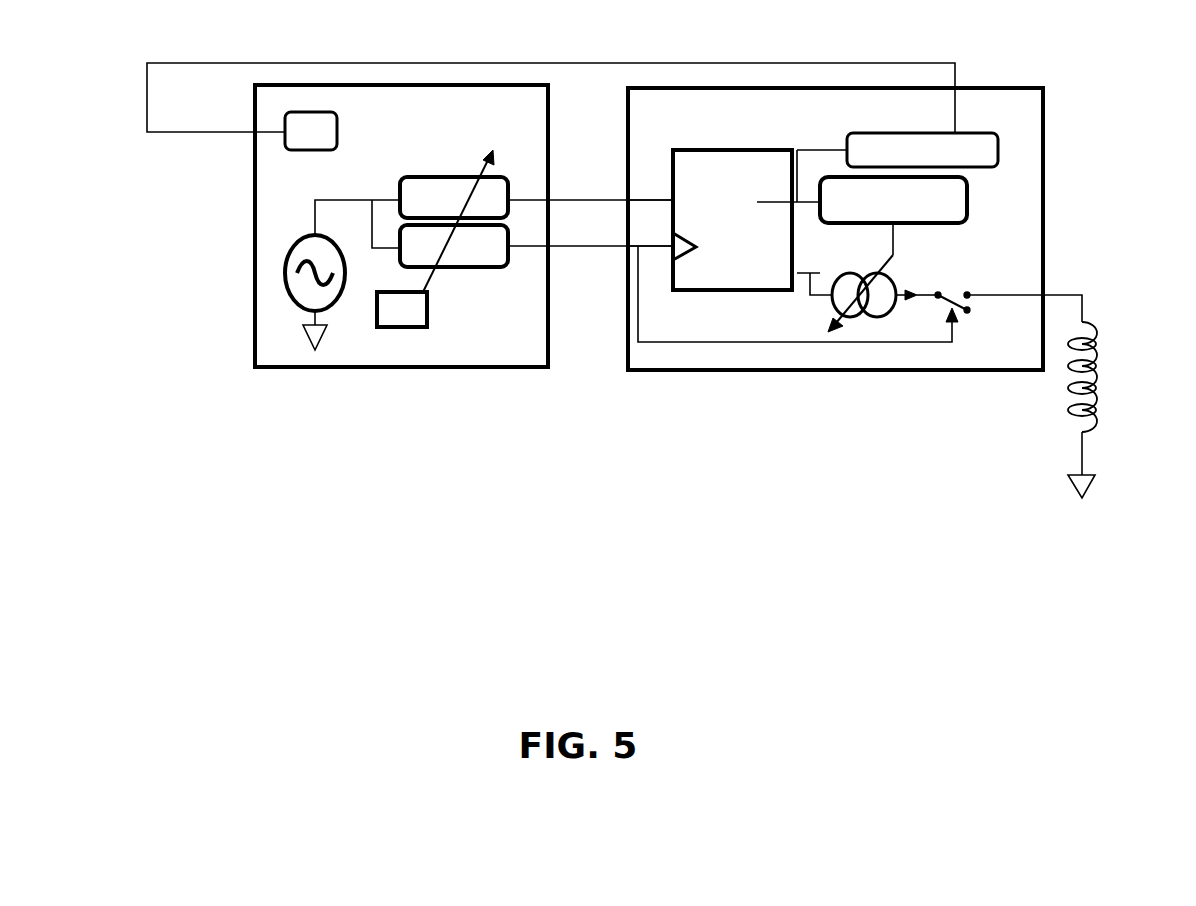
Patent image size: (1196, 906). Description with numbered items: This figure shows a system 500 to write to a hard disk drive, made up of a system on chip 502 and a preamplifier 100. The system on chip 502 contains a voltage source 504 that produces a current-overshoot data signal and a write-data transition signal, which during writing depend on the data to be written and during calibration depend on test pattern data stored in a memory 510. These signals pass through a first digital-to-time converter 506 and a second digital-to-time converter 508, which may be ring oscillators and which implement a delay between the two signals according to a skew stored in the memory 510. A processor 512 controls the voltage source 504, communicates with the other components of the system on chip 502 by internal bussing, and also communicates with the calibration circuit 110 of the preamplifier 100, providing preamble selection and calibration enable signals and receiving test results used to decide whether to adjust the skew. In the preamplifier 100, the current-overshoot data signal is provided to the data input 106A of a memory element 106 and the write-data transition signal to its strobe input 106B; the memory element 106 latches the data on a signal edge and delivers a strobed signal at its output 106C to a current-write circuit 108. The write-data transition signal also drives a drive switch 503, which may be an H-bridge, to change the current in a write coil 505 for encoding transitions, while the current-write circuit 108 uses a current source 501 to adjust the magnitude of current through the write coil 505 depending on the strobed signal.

The preamplifier 100 is at (800, 124).
The memory element 106 is at (724, 220).
The data input 106A is at (682, 199).
The strobe input 106B is at (704, 273).
The output 106C is at (788, 199).
The current-write circuit 108 is at (871, 211).
The calibration circuit 110 is at (902, 162).
The system 500 is at (337, 498).
The current source 501 is at (898, 272).
The system on chip 502 is at (380, 124).
The drive switch 503 is at (967, 315).
The voltage source 504 is at (297, 235).
The write coil 505 is at (1107, 332).
The first digital-to-time converter 506 is at (425, 172).
The second digital-to-time converter 508 is at (468, 270).
The memory 510 is at (435, 238).
The processor 512 is at (551, 106).